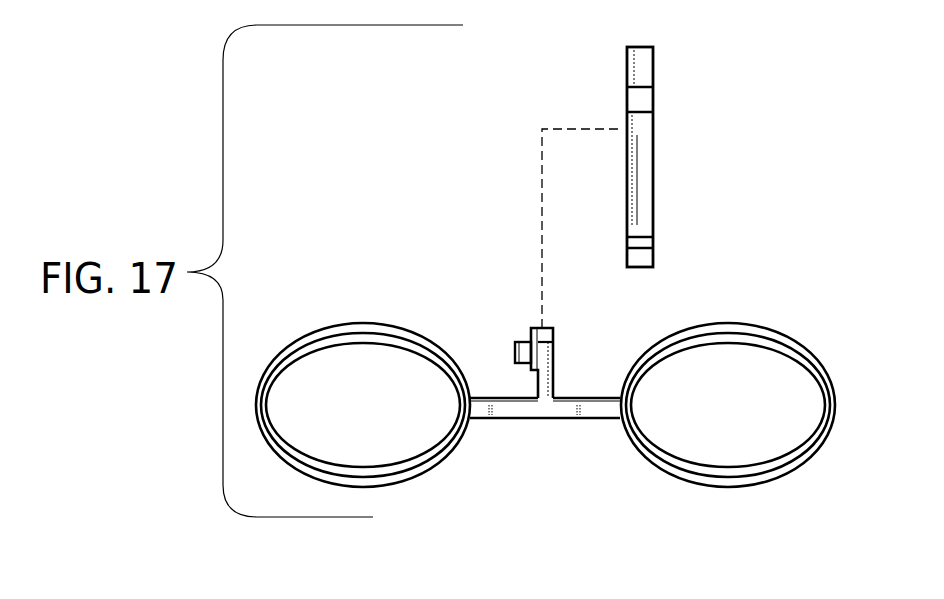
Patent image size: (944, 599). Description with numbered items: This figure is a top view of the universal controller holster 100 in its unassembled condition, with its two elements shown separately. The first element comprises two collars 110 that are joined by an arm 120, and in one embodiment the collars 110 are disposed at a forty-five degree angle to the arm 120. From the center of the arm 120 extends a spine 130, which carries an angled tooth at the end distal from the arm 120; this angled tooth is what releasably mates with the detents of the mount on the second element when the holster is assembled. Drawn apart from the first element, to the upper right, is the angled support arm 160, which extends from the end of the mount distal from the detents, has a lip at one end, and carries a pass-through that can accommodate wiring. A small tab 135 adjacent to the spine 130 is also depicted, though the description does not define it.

The universal controller holster 100 is at (720, 144).
The collars 110 is at (410, 433).
The arm 120 is at (518, 410).
The spine 130 is at (548, 383).
The tab 135 is at (517, 343).
The angled support arm 160 is at (630, 76).